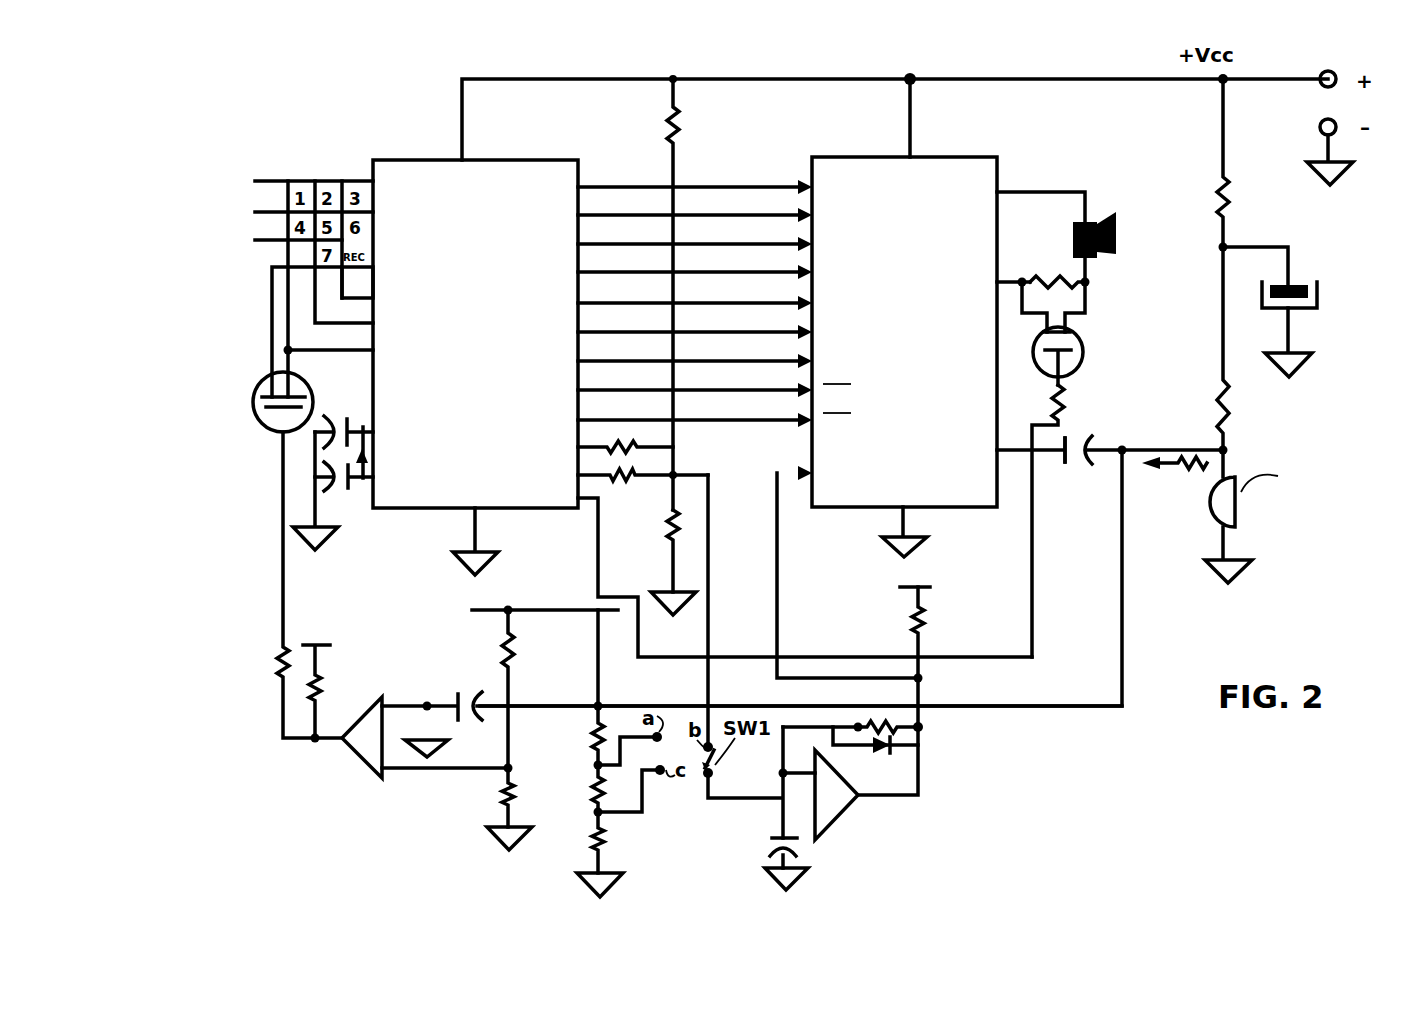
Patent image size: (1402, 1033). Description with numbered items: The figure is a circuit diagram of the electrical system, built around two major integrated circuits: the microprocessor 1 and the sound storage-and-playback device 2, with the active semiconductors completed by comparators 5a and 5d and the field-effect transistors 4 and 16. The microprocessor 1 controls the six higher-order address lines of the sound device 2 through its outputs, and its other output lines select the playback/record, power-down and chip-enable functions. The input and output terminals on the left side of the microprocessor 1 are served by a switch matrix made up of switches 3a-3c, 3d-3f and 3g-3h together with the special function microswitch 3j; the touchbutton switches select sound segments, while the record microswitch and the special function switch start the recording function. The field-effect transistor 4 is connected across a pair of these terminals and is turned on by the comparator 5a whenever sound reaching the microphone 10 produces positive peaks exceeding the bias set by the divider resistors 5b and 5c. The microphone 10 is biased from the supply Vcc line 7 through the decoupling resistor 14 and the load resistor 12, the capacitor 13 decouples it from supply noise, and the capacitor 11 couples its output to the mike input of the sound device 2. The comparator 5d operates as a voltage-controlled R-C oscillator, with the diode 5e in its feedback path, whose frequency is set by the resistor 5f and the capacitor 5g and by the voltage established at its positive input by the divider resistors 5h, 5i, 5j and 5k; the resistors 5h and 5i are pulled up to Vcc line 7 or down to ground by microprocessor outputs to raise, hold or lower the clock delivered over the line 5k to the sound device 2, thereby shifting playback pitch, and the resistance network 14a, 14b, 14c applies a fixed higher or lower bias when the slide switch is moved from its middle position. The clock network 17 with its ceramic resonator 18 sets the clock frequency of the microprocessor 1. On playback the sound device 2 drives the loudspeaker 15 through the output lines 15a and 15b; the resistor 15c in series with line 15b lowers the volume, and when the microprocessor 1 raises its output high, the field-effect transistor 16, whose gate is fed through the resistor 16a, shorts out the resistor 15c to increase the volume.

The microprocessor 1 is at (412, 160).
The sound storage-and-playback device 2 is at (965, 157).
The switches of switch matrix 3a-3c is at (278, 199).
The switches of switch matrix 3d-3f is at (278, 228).
The switch and record microswitch 3g-3h is at (280, 256).
The special function microswitch 3j is at (343, 283).
The field effect transistor 4 is at (255, 418).
The comparator 5a is at (357, 760).
The divider resistor 5b is at (515, 652).
The divider resistor 5c is at (505, 792).
The comparator oscillator 5d is at (852, 800).
The diode 5e is at (892, 752).
The resistor 5f is at (895, 722).
The capacitor 5g is at (772, 840).
The divider resistor 5h is at (632, 443).
The divider resistor 5i is at (625, 480).
The divider resistor 5j is at (670, 523).
The divider resistor and clock line 5k is at (668, 122).
The supply Vcc line 7 is at (482, 610).
The microphone 10 is at (1263, 516).
The capacitor 11 is at (1076, 464).
The load resistor 12 is at (1220, 400).
The capacitor 13 is at (1305, 316).
The decoupling resistor 14 is at (1230, 190).
The resistance network resistor 14a is at (596, 738).
The resistance network resistor 14b is at (596, 792).
The resistance network resistor 14c is at (597, 848).
The loudspeaker 15 is at (1115, 223).
The output line 15a is at (1041, 188).
The output line 15b is at (1020, 265).
The resistor 15c is at (1070, 290).
The field effect transistor 16 is at (1083, 350).
The resistor 16a is at (1064, 405).
The clock network 17 is at (306, 432).
The ceramic resonator 18 is at (365, 485).